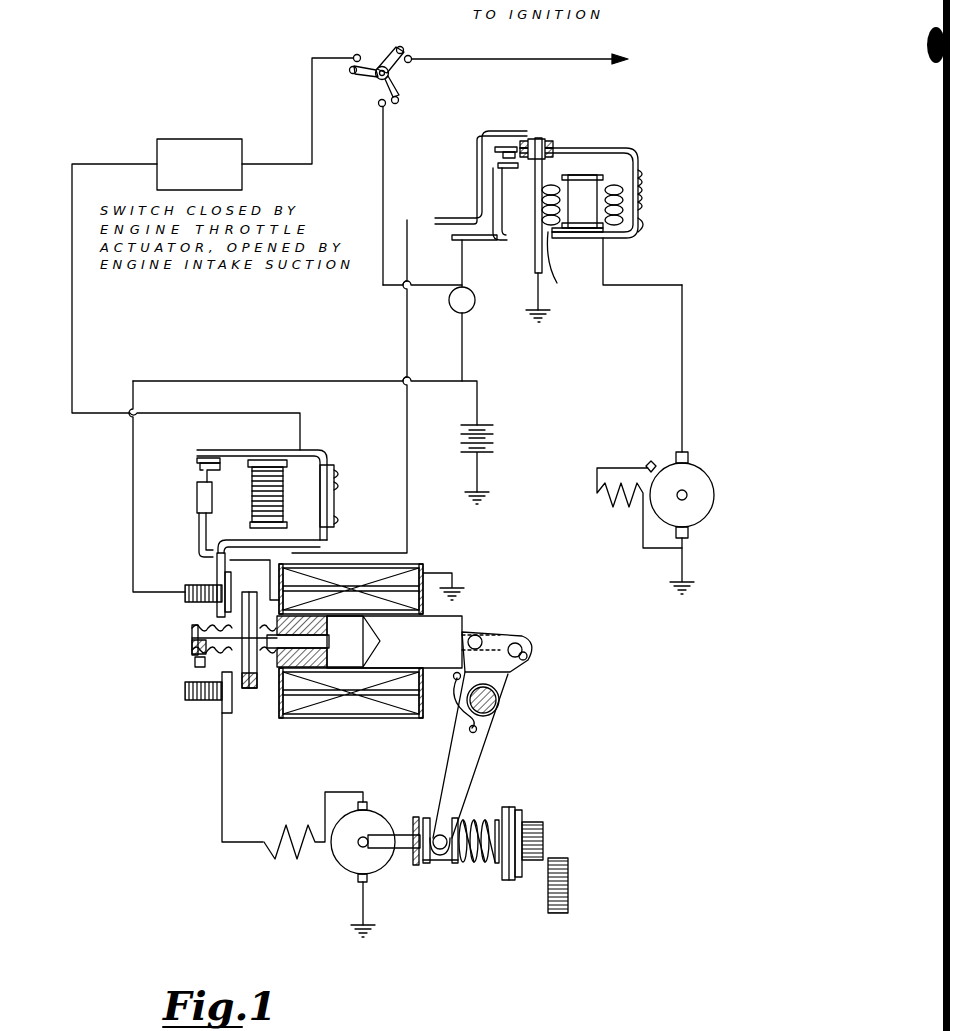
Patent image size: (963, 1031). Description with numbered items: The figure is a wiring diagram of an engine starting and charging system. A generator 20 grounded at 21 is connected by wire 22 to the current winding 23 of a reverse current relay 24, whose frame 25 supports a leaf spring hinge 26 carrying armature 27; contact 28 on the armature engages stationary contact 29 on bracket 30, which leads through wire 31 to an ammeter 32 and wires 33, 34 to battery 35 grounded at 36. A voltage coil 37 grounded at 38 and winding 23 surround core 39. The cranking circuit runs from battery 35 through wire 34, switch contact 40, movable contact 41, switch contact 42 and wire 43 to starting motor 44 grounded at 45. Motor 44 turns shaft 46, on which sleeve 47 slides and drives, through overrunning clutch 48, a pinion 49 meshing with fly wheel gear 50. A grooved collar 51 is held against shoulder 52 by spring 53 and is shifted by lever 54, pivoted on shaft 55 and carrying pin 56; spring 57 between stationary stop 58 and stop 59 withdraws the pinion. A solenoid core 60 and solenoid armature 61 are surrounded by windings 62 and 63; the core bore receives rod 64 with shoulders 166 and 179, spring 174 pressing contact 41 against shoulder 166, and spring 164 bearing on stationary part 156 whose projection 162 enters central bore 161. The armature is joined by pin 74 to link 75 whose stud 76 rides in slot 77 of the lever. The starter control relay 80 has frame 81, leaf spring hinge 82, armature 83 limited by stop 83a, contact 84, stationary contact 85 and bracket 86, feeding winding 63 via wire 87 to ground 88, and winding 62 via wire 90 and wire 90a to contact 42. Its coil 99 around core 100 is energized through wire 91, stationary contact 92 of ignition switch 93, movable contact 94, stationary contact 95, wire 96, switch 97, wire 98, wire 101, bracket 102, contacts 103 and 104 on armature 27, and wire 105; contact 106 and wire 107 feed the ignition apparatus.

The generator 20 is at (715, 494).
The ground connection 21 is at (688, 592).
The wire 22 is at (684, 350).
The current winding 23 is at (625, 206).
The reverse current relay 24 is at (569, 100).
The frame 25 is at (588, 236).
The leaf spring hinge 26 is at (648, 193).
The armature 27 is at (622, 148).
The contact 28 is at (498, 152).
The stationary contact 29 is at (509, 170).
The bracket 30 is at (490, 255).
The wire 31 is at (464, 283).
The ammeter 32 is at (476, 301).
The wire 33 is at (464, 355).
The wire 34 is at (262, 380).
The battery 35 is at (494, 442).
The battery ground connection 36 is at (481, 495).
The voltage coil 37 is at (556, 283).
The ground connection 38 is at (545, 314).
The core 39 is at (586, 218).
The switch contact 40 is at (224, 592).
The movable contact 41 is at (252, 612).
The switch contact 42 is at (222, 701).
The wire 43 is at (222, 788).
The starting motor 44 is at (350, 862).
The ground connection 45 is at (376, 925).
The shaft 46 is at (399, 850).
The sleeve 47 is at (476, 858).
The overrunning clutch 48 is at (522, 810).
The pinion 49 is at (545, 836).
The fly wheel gear 50 is at (570, 870).
The grooved collar 51 is at (426, 820).
The shoulder 52 is at (414, 820).
The spring 53 is at (494, 858).
The lever 54 is at (478, 752).
The shaft 55 is at (494, 717).
The pin 56 is at (440, 851).
The spring 57 is at (468, 718).
The stationary stop 58 is at (455, 680).
The stop 59 is at (478, 729).
The solenoid core 60 is at (304, 642).
The solenoid armature 61 is at (450, 632).
The electromagnet winding 62 is at (404, 566).
The electromagnet winding 63 is at (425, 583).
The rod 64 is at (300, 640).
The pin 74 is at (471, 636).
The link 75 is at (492, 642).
The stud 76 is at (520, 648).
The slot 77 is at (530, 660).
The starter control relay 80 is at (198, 437).
The frame 81 is at (330, 544).
The leaf spring hinge 82 is at (336, 500).
The armature 83 is at (256, 455).
The stop 83a is at (207, 452).
The contact 84 is at (197, 455).
The stationary contact 85 is at (202, 473).
The bracket 86 is at (198, 504).
The wire 87 is at (210, 521).
The ground connection 88 is at (460, 593).
The wire 90 is at (199, 539).
The wire 90a is at (296, 702).
The wire 91 is at (385, 192).
The stationary contact 92 is at (380, 105).
The ignition switch 93 is at (394, 29).
The movable contact 94 is at (372, 80).
The stationary contact 95 is at (355, 55).
The wire 96 is at (272, 162).
The switch 97 is at (172, 142).
The wire 98 is at (72, 278).
The relay magnet coil 99 is at (284, 499).
The core 100 is at (272, 528).
The wire 101 is at (408, 470).
The bracket 102 is at (500, 134).
The contact 103 is at (546, 143).
The movable contact 104 is at (545, 158).
The wire 105 is at (534, 253).
The contact 106 is at (412, 57).
The wire 107 is at (535, 58).
The stationary part 156 is at (192, 641).
The central bore 161 is at (226, 648).
The projection 162 is at (192, 652).
The spring 164 is at (197, 648).
The shoulder 166 is at (192, 632).
The spring 174 is at (268, 662).
The shoulder 179 is at (322, 656).